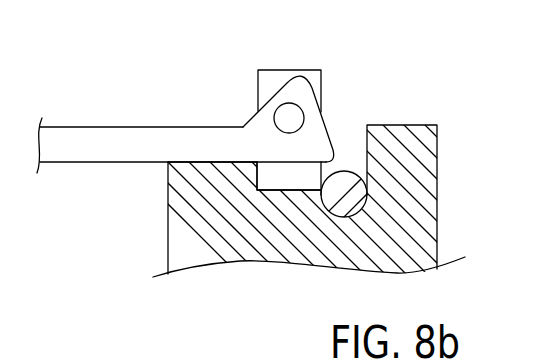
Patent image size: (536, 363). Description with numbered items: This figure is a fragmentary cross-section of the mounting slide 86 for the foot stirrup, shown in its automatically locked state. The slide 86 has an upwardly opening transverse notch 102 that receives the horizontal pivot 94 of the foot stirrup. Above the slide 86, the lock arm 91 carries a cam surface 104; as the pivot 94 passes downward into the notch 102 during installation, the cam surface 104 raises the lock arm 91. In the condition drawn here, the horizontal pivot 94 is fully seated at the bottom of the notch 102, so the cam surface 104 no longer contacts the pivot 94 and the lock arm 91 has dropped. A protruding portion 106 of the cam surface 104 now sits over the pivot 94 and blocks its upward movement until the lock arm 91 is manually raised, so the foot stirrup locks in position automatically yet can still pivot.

The lock arm 91 is at (150, 127).
The cam surface 104 is at (321, 113).
The transverse notch 102 is at (350, 100).
The protruding portion 106 is at (335, 148).
The slide 86 is at (412, 146).
The horizontal pivot 94 is at (343, 196).